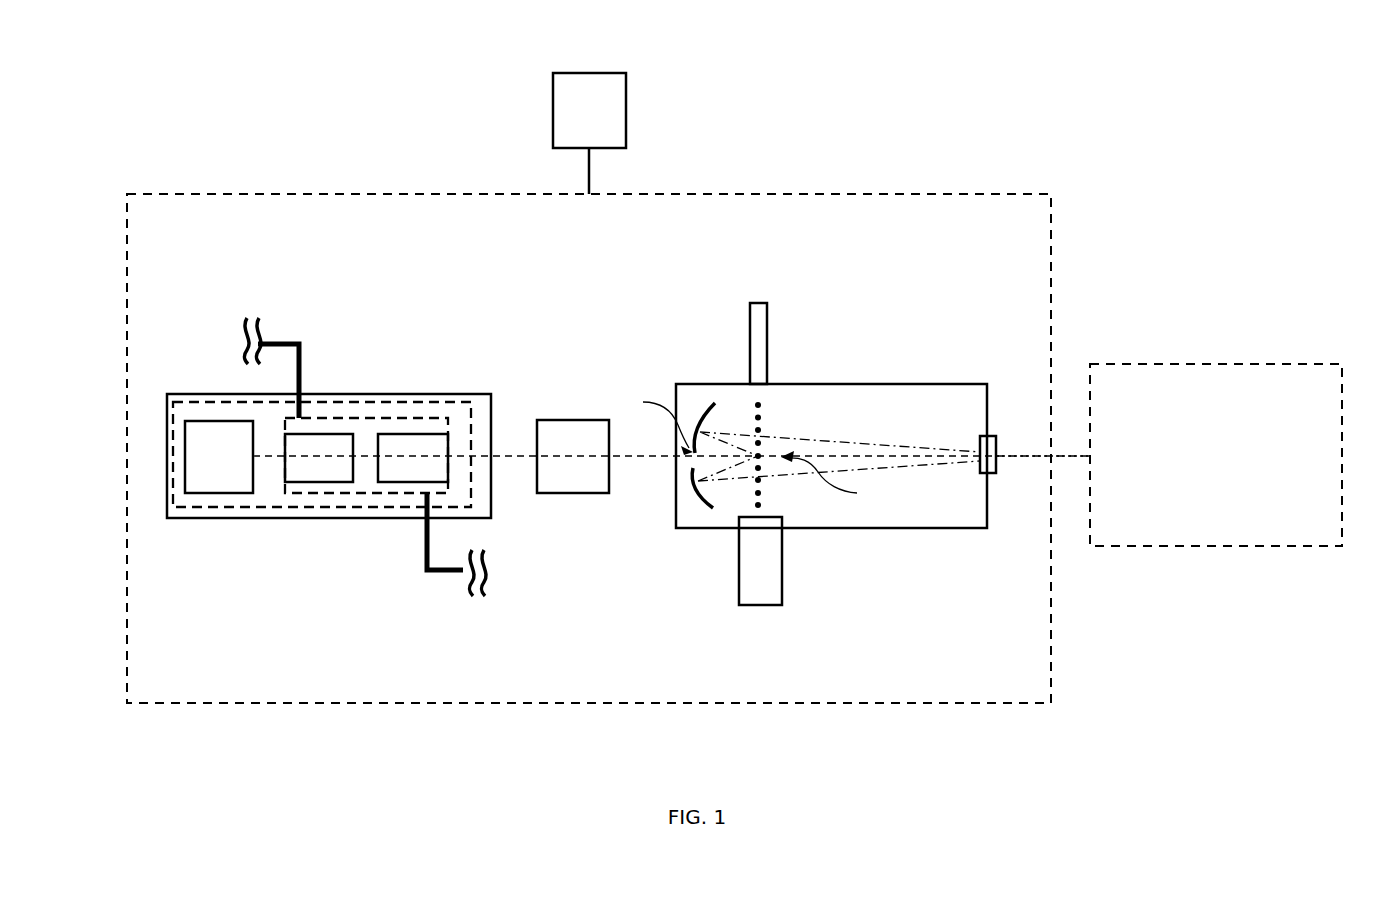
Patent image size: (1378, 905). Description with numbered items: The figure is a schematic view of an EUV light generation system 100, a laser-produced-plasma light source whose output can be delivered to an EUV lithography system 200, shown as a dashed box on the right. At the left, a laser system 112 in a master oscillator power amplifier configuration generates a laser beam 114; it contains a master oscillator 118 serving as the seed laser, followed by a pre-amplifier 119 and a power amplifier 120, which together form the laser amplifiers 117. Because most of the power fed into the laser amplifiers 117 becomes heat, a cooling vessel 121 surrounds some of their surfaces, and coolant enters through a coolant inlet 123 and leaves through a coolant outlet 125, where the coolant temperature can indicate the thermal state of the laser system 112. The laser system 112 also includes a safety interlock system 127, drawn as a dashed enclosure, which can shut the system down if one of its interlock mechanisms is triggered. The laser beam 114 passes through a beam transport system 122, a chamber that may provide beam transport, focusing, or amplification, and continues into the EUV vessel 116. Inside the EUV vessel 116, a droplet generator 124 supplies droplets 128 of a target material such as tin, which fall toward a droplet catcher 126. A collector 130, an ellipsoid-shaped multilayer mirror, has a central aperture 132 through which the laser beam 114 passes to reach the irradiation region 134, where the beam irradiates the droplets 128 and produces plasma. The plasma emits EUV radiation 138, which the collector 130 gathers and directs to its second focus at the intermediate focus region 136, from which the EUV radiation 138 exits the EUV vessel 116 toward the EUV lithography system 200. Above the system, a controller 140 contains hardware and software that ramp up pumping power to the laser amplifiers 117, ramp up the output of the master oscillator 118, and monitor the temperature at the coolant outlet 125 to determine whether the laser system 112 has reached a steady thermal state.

The EUV light generation system 100 is at (397, 193).
The laser system 112 is at (328, 393).
The laser beam 114 is at (520, 453).
The EUV vessel 116 is at (858, 382).
The laser amplifiers 117 is at (366, 546).
The master oscillator 118 is at (219, 457).
The pre-amplifier 119 is at (332, 482).
The power amplifier 120 is at (410, 482).
The cooling vessel 121 is at (398, 418).
The beam transport system 122 is at (578, 495).
The coolant inlet 123 is at (245, 368).
The droplet generator 124 is at (758, 300).
The coolant outlet 125 is at (464, 560).
The droplet catcher 126 is at (782, 560).
The safety interlock system 127 is at (242, 507).
The droplets 128 is at (765, 455).
The collector 130 is at (708, 405).
The aperture 132 is at (646, 420).
The irradiation region 134 is at (842, 480).
The intermediate focus region 136 is at (995, 435).
The EUV radiation 138 is at (1043, 457).
The controller 140 is at (626, 122).
The EUV lithography system 200 is at (1216, 455).